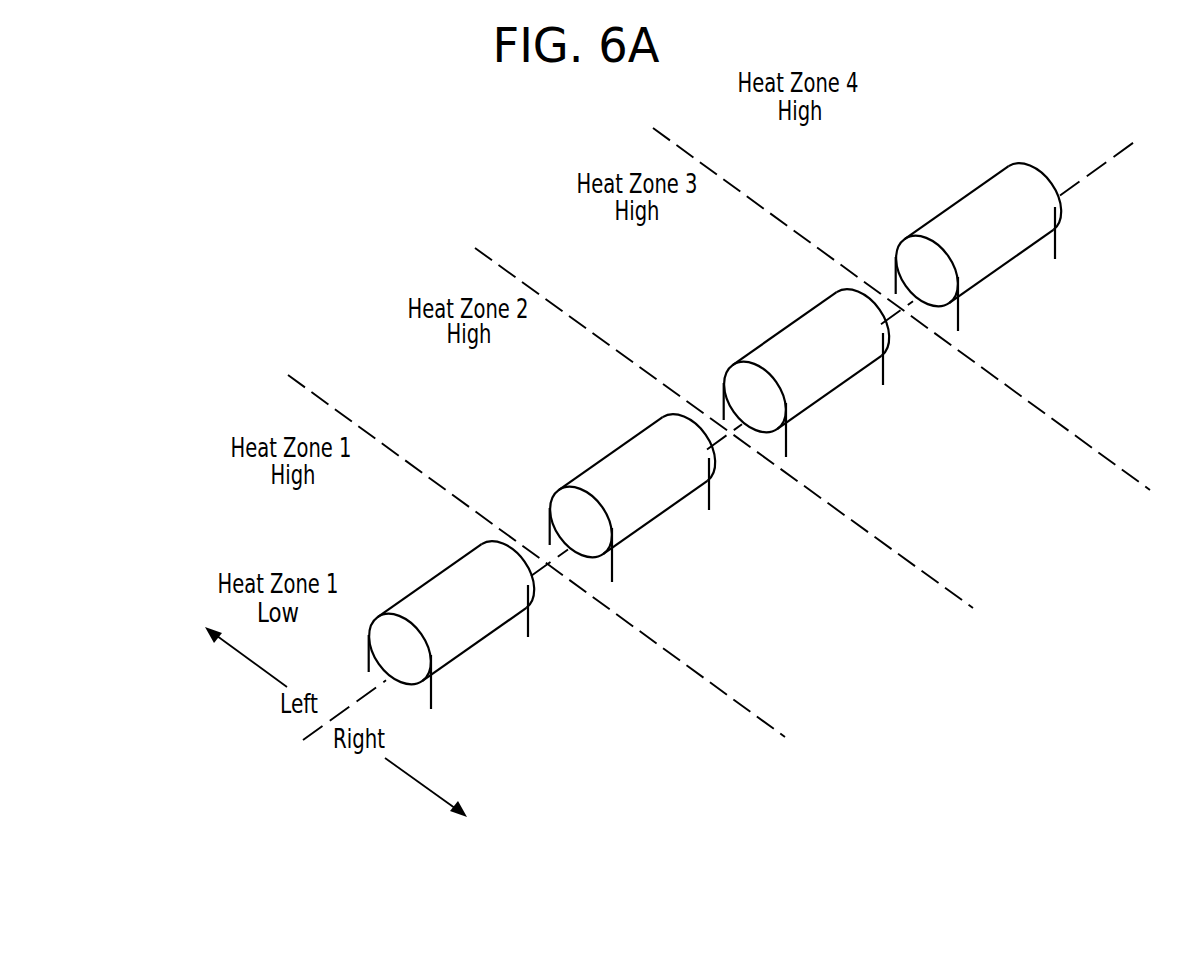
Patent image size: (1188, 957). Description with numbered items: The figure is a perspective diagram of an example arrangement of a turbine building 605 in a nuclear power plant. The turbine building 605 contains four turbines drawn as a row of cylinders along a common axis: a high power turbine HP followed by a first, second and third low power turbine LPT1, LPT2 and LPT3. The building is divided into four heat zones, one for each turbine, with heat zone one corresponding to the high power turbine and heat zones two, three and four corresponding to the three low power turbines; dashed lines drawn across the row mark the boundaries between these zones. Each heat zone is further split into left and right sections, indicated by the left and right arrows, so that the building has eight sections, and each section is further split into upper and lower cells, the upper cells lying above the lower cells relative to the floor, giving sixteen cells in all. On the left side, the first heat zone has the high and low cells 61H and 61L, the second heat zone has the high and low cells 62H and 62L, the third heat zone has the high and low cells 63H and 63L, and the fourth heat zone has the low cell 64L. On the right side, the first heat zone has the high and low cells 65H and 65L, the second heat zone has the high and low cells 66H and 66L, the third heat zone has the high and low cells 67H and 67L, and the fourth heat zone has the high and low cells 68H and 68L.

The turbine building 605 is at (288, 182).
The low cell for the first heat zone on the left side 61L is at (353, 658).
The high cell for the first heat zone on the left side 61H is at (388, 518).
The low cell for the second heat zone on the left side 62L is at (497, 510).
The high cell for the second heat zone on the left side 62H is at (572, 372).
The low cell for the third heat zone on the left side 63L is at (672, 367).
The high cell for the third heat zone on the left side 63H is at (733, 247).
The low cell for the fourth heat zone on the left side 64L is at (848, 250).
The low cell for the first heat zone on the right side 65L is at (454, 740).
The high cell for the first heat zone on the right side 65H is at (907, 141).
The low cell for the second heat zone on the right side 66L is at (667, 602).
The high cell for the second heat zone on the right side 66H is at (857, 589).
The low cell for the third heat zone on the right side 67L is at (839, 470).
The high cell for the third heat zone on the right side 67H is at (970, 459).
The low cell for the fourth heat zone on the right side 68L is at (983, 341).
The high cell for the fourth heat zone on the right side 68H is at (1133, 308).